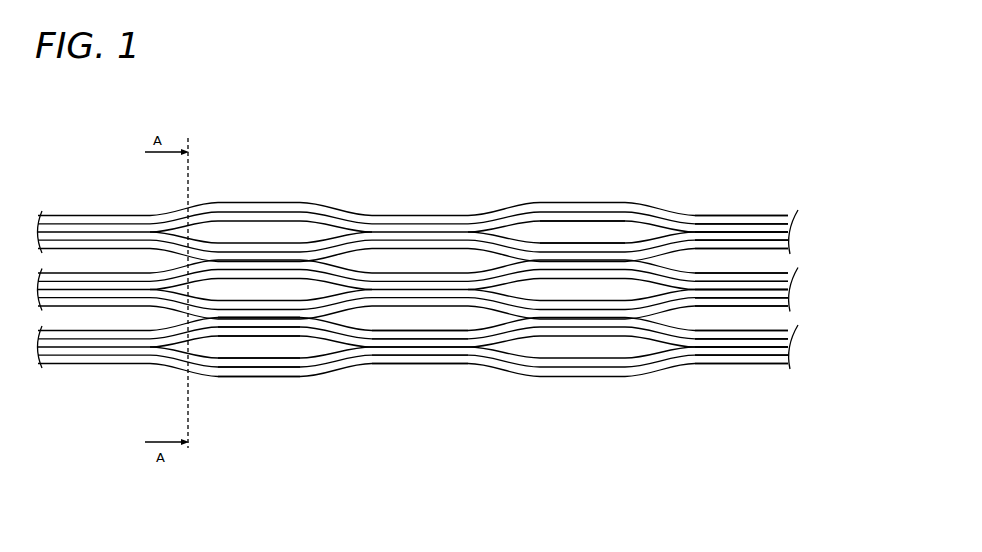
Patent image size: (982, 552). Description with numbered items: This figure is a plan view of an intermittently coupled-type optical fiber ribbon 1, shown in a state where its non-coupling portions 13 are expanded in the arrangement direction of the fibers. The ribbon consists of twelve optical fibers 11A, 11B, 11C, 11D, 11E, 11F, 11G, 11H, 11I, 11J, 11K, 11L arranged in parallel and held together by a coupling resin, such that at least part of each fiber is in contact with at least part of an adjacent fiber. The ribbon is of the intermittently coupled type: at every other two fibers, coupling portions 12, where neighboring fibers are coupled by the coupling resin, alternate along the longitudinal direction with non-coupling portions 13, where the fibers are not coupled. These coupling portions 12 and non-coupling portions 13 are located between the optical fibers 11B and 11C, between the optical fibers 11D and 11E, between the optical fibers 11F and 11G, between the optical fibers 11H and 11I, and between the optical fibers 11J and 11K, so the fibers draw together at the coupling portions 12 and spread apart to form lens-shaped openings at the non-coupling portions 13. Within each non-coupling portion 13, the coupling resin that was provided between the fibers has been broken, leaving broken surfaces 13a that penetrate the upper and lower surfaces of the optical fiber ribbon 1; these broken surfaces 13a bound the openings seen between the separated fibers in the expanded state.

The intermittently coupled-type optical fiber ribbon 1 is at (518, 134).
The optical fiber 11A is at (790, 220).
The optical fiber 11B is at (790, 228).
The optical fiber 11C is at (790, 236).
The optical fiber 11D is at (790, 245).
The optical fiber 11E is at (790, 277).
The optical fiber 11F is at (790, 286).
The optical fiber 11G is at (790, 294).
The optical fiber 11H is at (790, 302).
The optical fiber 11I is at (790, 334).
The optical fiber 11J is at (790, 343).
The optical fiber 11K is at (790, 351).
The optical fiber 11L is at (790, 360).
The coupling portion 12 is at (258, 322).
The non-coupling portion 13 is at (375, 320).
The broken surface 13a is at (597, 240).